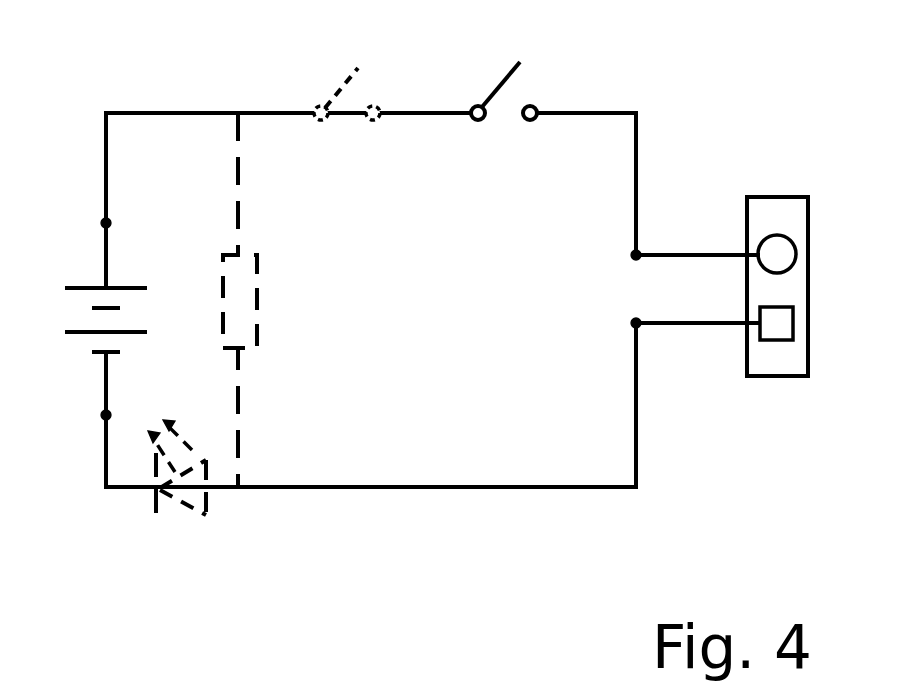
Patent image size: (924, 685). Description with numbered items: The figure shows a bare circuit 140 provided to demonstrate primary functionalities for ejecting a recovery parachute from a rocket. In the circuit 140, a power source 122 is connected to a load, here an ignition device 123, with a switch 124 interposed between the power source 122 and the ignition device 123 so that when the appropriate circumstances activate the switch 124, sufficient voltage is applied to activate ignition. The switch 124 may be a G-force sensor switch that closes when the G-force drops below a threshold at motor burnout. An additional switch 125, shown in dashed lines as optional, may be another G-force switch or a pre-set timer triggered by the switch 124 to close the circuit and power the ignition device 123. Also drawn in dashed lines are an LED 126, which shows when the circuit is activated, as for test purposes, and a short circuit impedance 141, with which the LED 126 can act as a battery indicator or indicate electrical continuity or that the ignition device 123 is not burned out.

The bare circuit 140 is at (118, 81).
The power source 122 is at (89, 335).
The ignition device 123 is at (765, 373).
The switch 124 is at (501, 72).
The additional switch 125 is at (340, 73).
The LED 126 is at (207, 488).
The short circuit impedance 141 is at (257, 289).